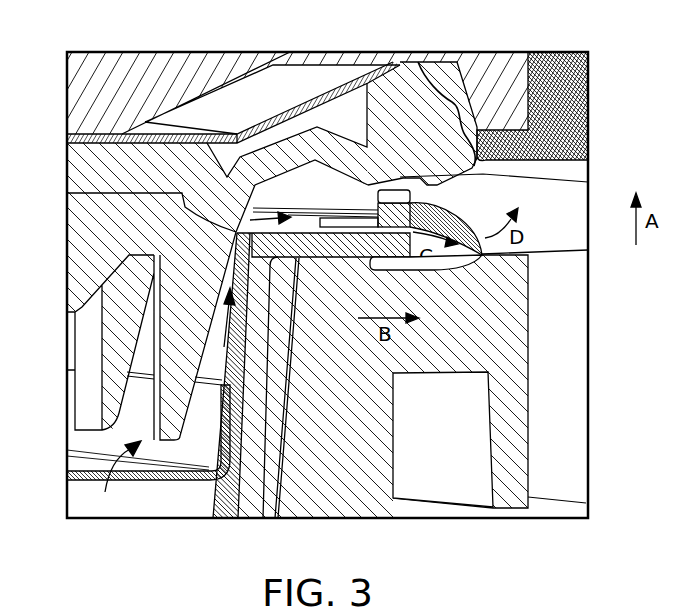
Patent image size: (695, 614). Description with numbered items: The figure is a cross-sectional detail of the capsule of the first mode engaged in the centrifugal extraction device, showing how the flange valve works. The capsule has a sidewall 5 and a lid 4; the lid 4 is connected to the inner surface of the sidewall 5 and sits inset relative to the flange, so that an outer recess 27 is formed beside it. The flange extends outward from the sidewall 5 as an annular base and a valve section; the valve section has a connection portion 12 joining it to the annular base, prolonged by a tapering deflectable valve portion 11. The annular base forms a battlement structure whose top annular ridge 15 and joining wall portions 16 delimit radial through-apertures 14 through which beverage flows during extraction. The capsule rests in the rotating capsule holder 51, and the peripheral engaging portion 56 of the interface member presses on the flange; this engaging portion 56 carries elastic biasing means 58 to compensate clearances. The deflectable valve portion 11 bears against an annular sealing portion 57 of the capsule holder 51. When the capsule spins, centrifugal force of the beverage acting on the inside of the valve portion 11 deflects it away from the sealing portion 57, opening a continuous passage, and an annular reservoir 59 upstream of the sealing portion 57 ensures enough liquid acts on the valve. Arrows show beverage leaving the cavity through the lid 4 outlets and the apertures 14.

The lid 4 is at (177, 493).
The sidewall 5 is at (220, 484).
The deflectable valve portion 11 is at (437, 220).
The connection portion 12 is at (389, 190).
The radial through-apertures 14 is at (286, 215).
The top annular ridge 15 is at (398, 190).
The joining wall portions 16 is at (388, 224).
The outer recess 27 is at (79, 442).
The rotating capsule holder 51 is at (360, 523).
The peripheral engaging portion 56 is at (474, 166).
The annular sealing portion 57 is at (586, 251).
The elastic biasing means 58 is at (312, 78).
The annular reservoir 59 is at (433, 272).